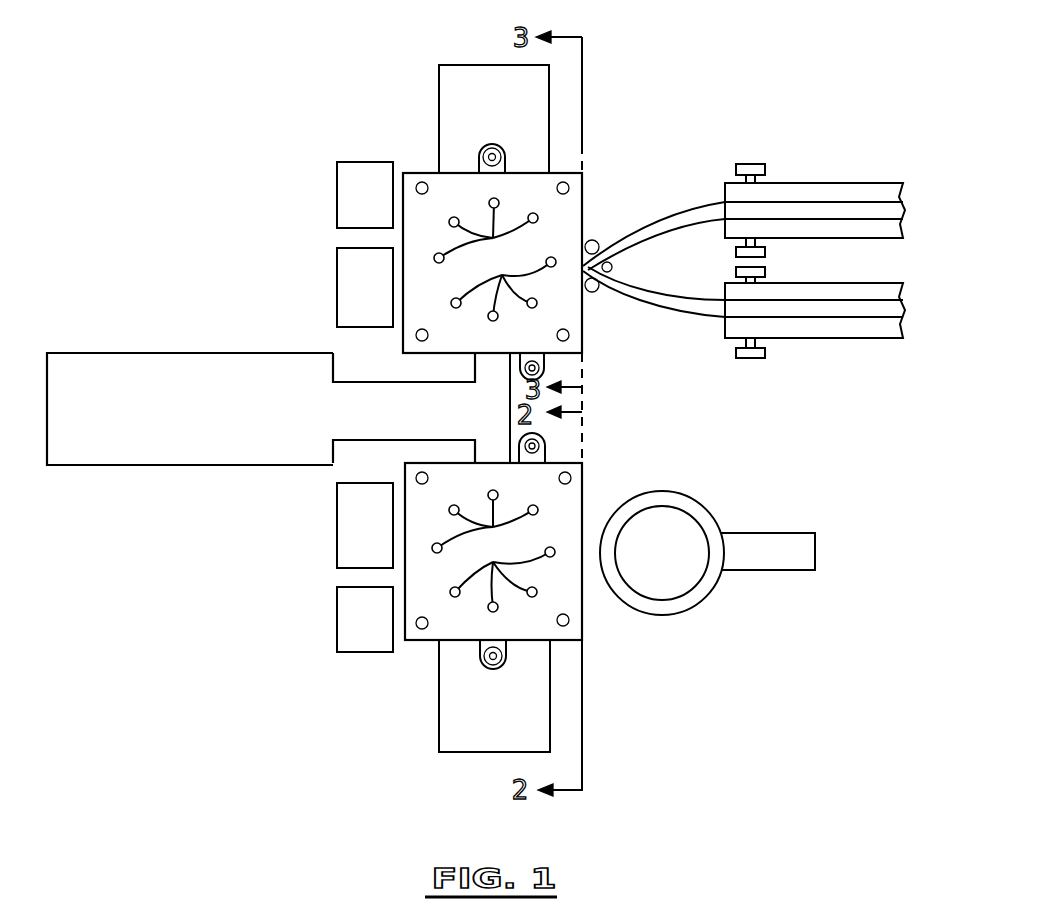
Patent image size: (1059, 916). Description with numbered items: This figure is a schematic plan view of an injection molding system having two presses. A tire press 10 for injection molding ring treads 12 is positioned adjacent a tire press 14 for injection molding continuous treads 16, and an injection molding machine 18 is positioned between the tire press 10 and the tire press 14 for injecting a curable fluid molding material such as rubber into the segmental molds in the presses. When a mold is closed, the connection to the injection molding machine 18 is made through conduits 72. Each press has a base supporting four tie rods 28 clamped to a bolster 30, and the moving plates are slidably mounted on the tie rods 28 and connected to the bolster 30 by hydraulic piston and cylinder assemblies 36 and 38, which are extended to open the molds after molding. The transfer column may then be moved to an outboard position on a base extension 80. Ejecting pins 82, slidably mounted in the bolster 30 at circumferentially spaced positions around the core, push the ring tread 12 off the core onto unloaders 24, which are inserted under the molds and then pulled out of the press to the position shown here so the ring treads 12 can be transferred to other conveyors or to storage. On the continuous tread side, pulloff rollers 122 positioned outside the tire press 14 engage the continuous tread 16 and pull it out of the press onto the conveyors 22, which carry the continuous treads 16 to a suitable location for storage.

The tire press 10 is at (583, 632).
The ring treads 12 is at (690, 512).
The tire press 14 is at (572, 212).
The continuous treads 16 is at (870, 210).
The injection molding machine 18 is at (187, 458).
The conveyors 22 is at (803, 195).
The unloaders 24 is at (765, 545).
The tie rods 28 is at (418, 477).
The bolster 30 is at (585, 520).
The hydraulic piston and cylinder assembly 36 is at (482, 157).
The hydraulic piston and cylinder assembly 38 is at (541, 440).
The conduits 72 is at (493, 372).
The base extension 80 is at (452, 70).
The ejecting pins 82 is at (494, 405).
The pulloff rollers 122 is at (598, 242).